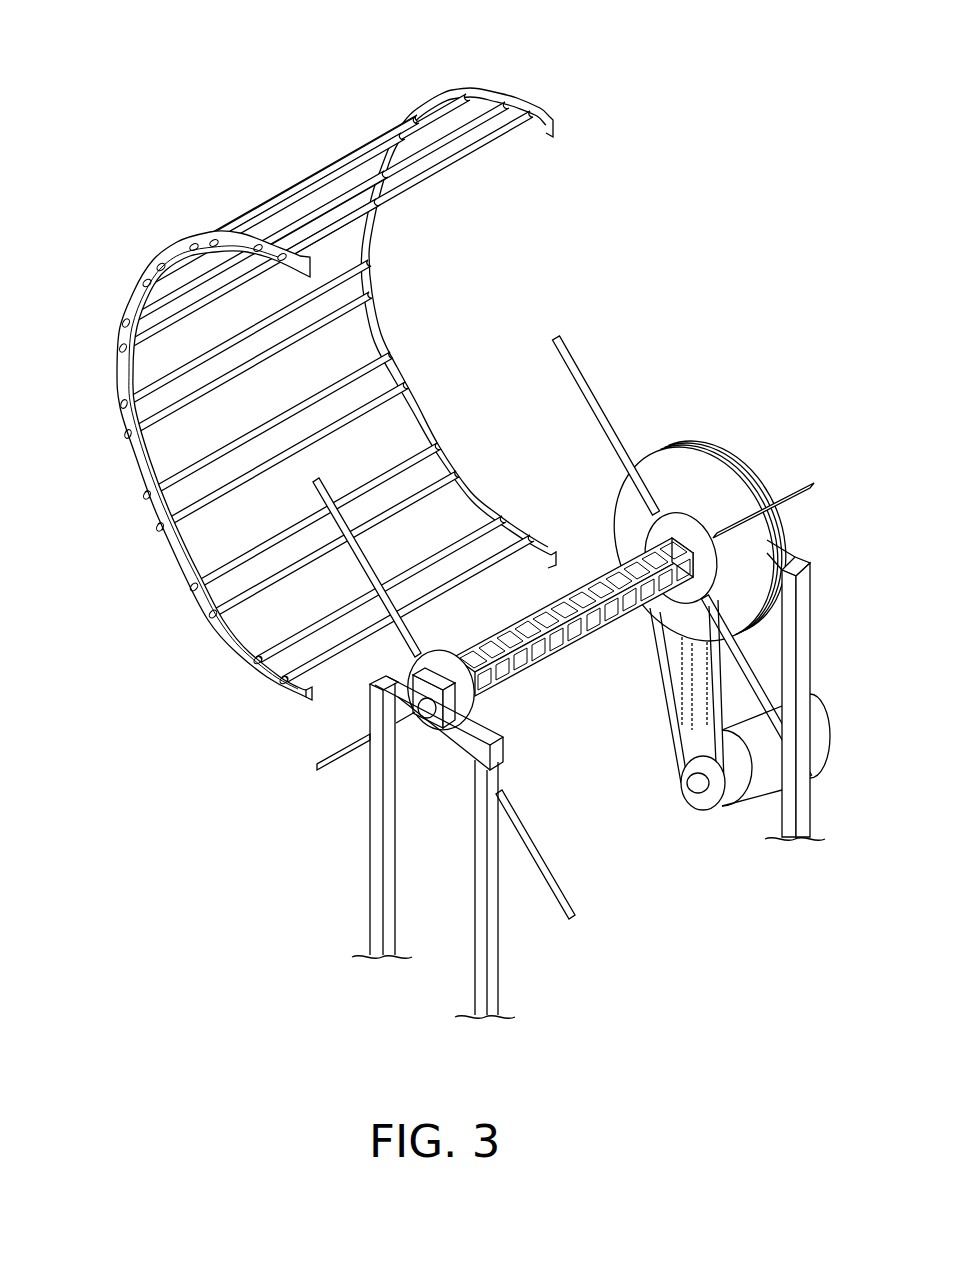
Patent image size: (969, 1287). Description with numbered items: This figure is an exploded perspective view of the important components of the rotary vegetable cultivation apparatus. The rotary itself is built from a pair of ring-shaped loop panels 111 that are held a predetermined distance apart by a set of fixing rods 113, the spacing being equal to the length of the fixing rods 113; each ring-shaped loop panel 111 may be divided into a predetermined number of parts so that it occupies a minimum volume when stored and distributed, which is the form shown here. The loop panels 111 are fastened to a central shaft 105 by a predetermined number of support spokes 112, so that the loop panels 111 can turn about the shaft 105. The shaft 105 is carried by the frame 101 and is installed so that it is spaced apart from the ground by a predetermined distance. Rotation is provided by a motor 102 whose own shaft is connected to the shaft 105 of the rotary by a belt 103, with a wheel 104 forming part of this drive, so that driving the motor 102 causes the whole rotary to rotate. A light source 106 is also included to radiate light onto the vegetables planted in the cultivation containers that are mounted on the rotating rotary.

The frame 101 is at (375, 895).
The motor 102 is at (822, 732).
The belt 103 is at (762, 662).
The wheel 104 is at (697, 474).
The shaft 105 is at (400, 712).
The light source 106 is at (537, 685).
The loop panel 111 is at (301, 356).
The support spoke 112 is at (574, 352).
The fixing rod 113 is at (473, 118).